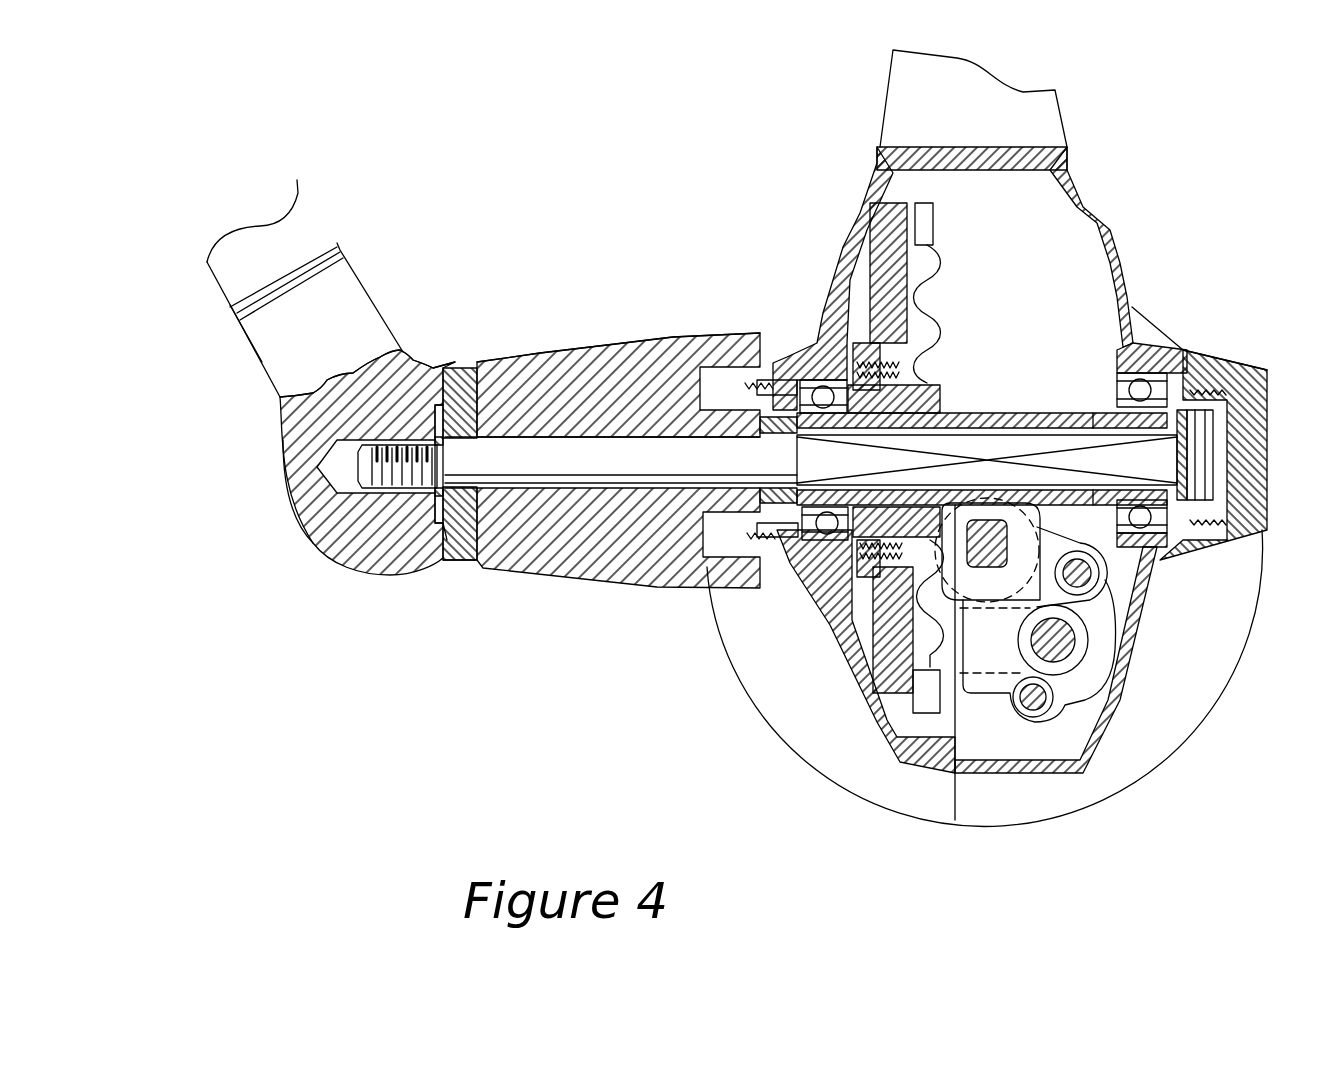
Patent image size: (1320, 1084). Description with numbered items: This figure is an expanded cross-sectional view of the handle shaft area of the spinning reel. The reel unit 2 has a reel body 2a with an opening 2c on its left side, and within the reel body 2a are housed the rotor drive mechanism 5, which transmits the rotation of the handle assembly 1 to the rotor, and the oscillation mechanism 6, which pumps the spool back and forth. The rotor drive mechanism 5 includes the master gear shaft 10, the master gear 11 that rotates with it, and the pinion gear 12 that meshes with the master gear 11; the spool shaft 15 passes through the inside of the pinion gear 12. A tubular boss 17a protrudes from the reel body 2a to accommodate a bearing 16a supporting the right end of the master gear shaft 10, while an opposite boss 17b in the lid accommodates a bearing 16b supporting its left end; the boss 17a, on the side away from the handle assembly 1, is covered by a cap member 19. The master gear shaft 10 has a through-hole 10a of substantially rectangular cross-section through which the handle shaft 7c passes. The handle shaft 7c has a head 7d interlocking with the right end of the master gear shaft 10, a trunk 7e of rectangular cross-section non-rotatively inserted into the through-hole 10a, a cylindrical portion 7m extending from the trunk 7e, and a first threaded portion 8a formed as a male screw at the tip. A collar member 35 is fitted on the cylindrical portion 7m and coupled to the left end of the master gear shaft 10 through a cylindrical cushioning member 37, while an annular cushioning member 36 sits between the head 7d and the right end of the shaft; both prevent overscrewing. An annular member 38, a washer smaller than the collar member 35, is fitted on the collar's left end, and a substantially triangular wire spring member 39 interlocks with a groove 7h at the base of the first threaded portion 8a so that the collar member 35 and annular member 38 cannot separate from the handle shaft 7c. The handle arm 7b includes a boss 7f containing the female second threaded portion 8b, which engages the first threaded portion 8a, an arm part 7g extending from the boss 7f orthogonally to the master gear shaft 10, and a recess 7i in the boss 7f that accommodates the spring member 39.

The handle assembly 1 is at (415, 282).
The reel unit 2 is at (1112, 215).
The reel body 2a is at (1033, 773).
The opening 2c is at (940, 773).
The rotor drive mechanism 5 is at (958, 292).
The oscillation mechanism 6 is at (993, 737).
The handle arm 7b is at (370, 265).
The handle shaft 7c is at (641, 440).
The head 7d is at (1197, 433).
The trunk 7e is at (960, 413).
The boss 7f is at (293, 487).
The arm part 7g is at (257, 345).
The groove 7h is at (462, 520).
The recess 7i is at (447, 530).
The cylindrical portion 7m is at (532, 440).
The first threaded portion 8a is at (353, 553).
The second threaded portion 8b is at (400, 470).
The master gear shaft 10 is at (1047, 411).
The through-hole 10a is at (1090, 413).
The master gear 11 is at (893, 230).
The pinion gear 12 is at (1107, 610).
The spool shaft 15 is at (990, 527).
The bearing 16a is at (1140, 560).
The bearing 16b is at (828, 565).
The tubular boss 17a is at (1177, 545).
The boss 17b is at (810, 555).
The cap member 19 is at (1247, 387).
The collar member 35 is at (573, 340).
The annular cushioning member 36 is at (1183, 357).
The cushioning member 37 is at (775, 363).
The annular member 38 is at (457, 358).
The spring member 39 is at (438, 495).